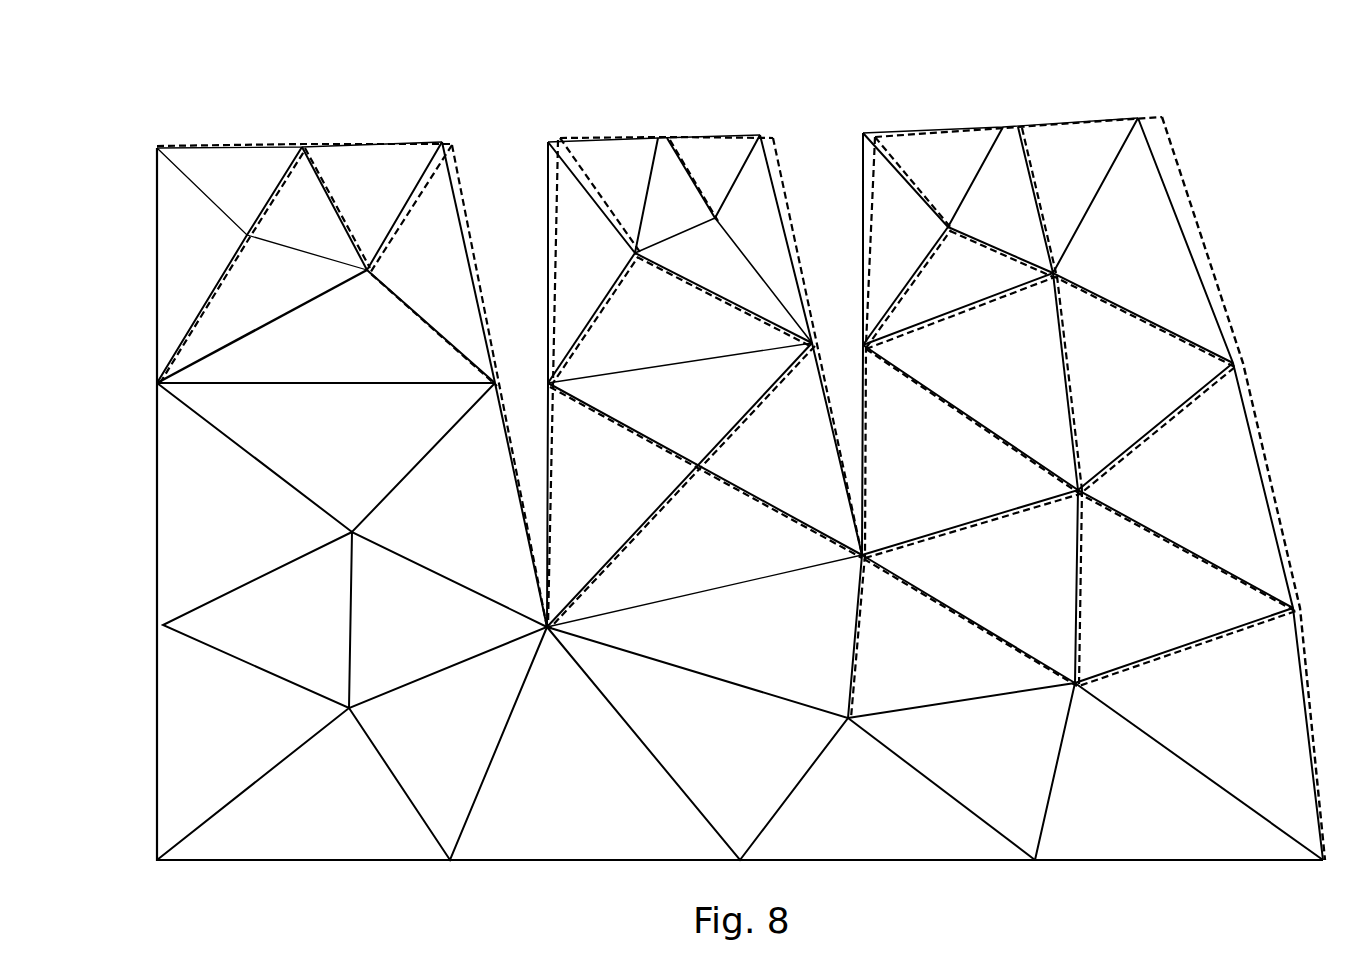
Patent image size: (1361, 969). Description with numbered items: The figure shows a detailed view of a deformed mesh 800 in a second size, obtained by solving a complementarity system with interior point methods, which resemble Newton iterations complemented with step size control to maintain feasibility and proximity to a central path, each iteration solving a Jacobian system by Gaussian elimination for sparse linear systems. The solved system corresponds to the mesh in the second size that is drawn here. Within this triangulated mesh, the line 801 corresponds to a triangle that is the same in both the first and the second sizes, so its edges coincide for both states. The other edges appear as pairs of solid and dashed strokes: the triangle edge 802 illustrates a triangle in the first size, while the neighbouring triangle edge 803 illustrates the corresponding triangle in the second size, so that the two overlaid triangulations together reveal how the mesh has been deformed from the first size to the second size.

The mesh 800 is at (98, 71).
The line 801 is at (157, 557).
The triangle in first size 802 is at (1202, 232).
The triangle in second size 803 is at (1203, 295).